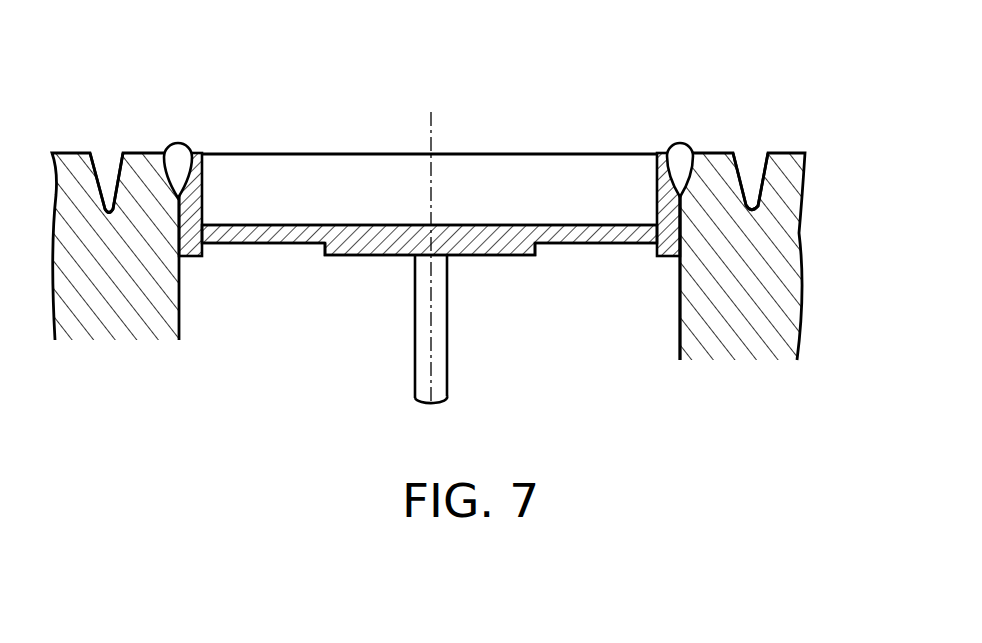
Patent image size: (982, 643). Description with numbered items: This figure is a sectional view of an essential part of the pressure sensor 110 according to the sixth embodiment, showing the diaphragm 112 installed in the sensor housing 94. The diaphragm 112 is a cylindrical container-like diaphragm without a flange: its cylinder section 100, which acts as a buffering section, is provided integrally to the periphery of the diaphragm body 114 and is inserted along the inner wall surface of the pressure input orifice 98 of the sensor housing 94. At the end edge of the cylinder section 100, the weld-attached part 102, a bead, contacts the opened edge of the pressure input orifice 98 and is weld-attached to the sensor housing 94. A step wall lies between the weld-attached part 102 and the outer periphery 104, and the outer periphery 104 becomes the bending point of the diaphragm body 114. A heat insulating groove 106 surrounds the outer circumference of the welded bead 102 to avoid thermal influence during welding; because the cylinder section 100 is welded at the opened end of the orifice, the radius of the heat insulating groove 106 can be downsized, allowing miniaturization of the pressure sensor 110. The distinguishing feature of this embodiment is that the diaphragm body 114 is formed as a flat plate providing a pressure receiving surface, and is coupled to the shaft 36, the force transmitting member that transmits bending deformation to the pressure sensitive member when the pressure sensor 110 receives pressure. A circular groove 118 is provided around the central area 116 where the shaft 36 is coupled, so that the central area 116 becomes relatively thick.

The shaft 36 is at (447, 347).
The sensor housing 94 is at (792, 233).
The pressure input orifice 98 is at (680, 303).
The cylinder section 100 is at (205, 160).
The weld-attached part 102 is at (176, 142).
The outer periphery 104 is at (205, 218).
The heat insulating groove 106 is at (107, 177).
The pressure sensor 110 is at (614, 100).
The diaphragm 112 is at (532, 154).
The diaphragm body 114 is at (370, 225).
The central area 116 is at (387, 255).
The circular groove 118 is at (260, 245).